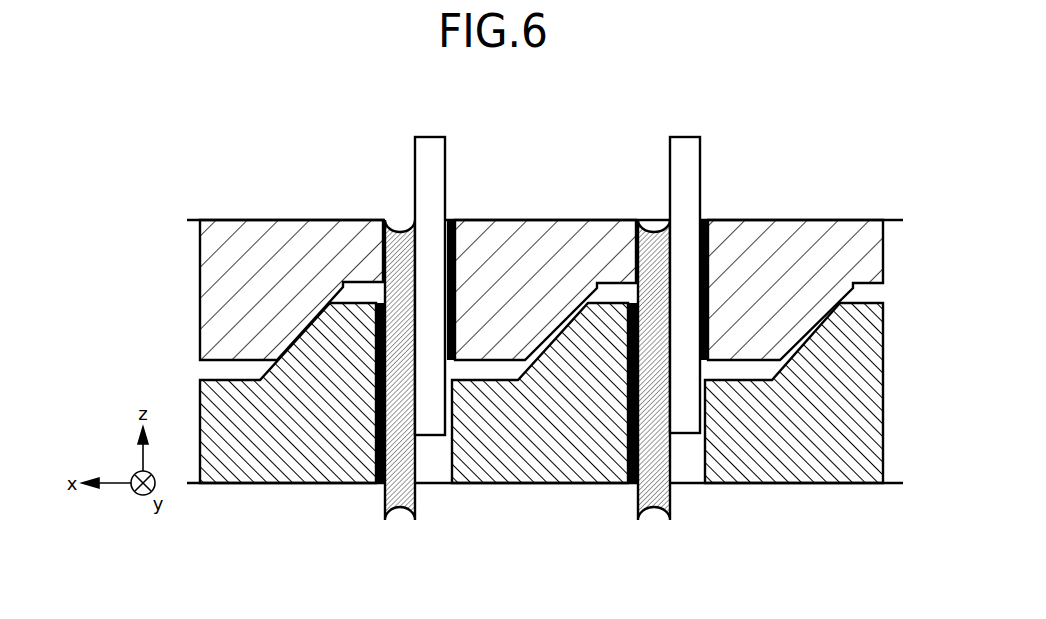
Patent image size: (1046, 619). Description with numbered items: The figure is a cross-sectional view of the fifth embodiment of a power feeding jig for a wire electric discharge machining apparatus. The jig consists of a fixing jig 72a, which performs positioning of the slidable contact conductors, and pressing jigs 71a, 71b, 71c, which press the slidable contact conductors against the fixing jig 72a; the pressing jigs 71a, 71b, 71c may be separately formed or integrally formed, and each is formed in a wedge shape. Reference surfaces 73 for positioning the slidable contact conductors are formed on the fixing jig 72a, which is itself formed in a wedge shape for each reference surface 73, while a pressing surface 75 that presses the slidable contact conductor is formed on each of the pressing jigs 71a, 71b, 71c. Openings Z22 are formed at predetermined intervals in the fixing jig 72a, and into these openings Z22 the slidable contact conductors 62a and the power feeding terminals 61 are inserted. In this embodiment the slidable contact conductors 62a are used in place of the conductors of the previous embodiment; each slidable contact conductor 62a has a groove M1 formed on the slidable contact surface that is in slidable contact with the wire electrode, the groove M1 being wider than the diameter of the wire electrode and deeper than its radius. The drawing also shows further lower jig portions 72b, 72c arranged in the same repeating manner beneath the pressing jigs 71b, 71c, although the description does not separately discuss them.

The power feeding terminal 61 is at (430, 150).
The slidable contact conductor 62a is at (385, 510).
The pressing jig 71a is at (272, 232).
The pressing jig 71b is at (557, 235).
The pressing jig 71c is at (812, 235).
The fixing jig 72a is at (258, 475).
The lower holding member 72b is at (540, 393).
The lower holding member 72c is at (794, 393).
The reference surface 73 is at (375, 445).
The pressing surface 75 is at (457, 256).
The groove M1 is at (400, 514).
The opening Z22 is at (439, 465).